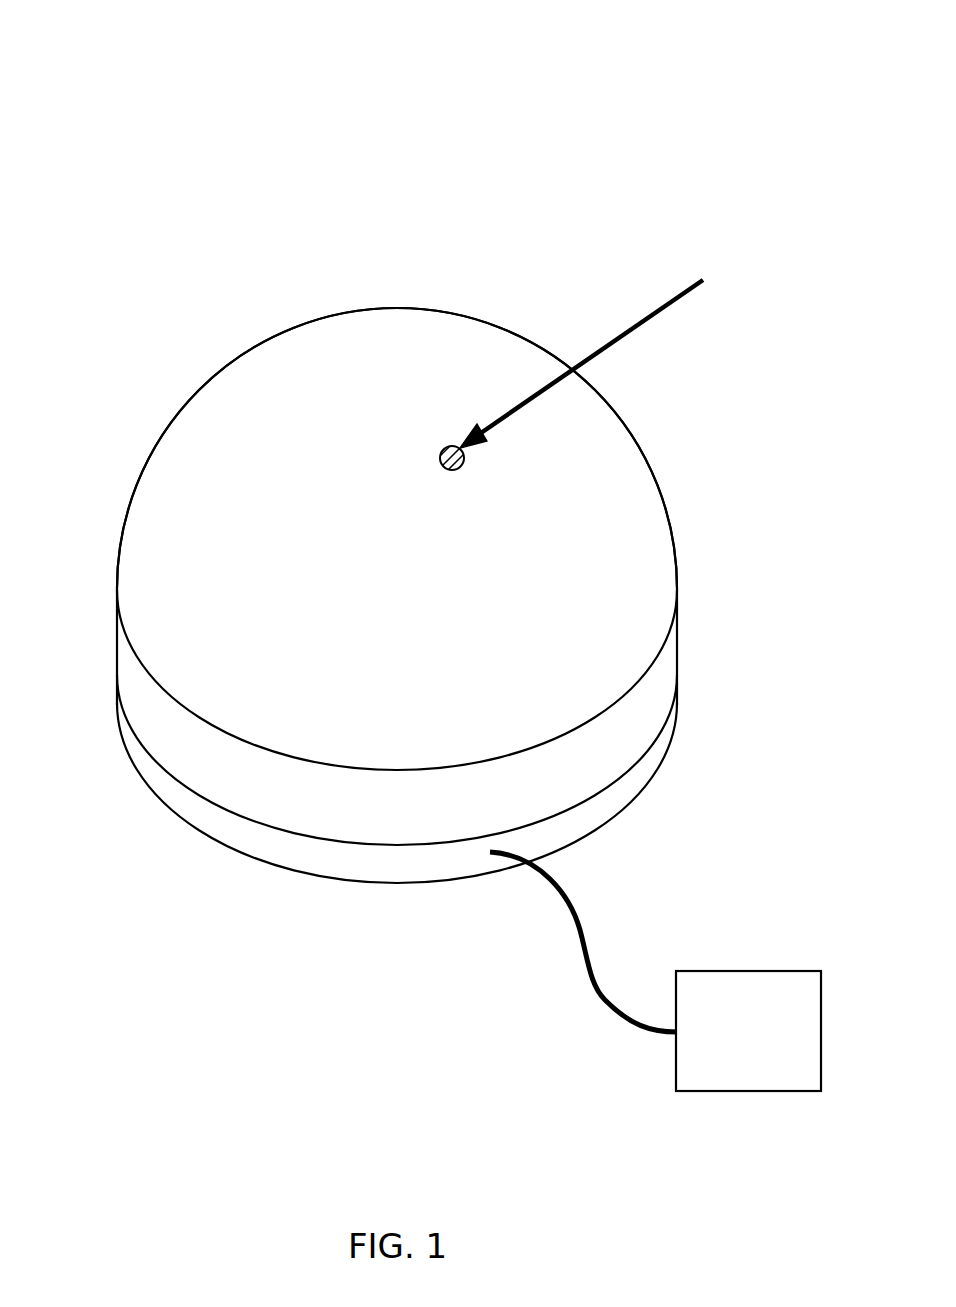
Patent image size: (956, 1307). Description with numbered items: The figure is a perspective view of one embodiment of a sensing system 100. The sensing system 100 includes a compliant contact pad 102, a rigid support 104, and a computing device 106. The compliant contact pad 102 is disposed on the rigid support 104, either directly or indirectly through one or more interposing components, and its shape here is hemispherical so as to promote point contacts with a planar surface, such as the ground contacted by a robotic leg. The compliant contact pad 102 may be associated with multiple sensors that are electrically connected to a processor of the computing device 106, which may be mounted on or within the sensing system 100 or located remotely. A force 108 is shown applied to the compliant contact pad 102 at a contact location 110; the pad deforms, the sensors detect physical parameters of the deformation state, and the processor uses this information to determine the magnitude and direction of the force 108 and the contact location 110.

The sensing system 100 is at (179, 148).
The compliant contact pad 102 is at (190, 448).
The rigid support 104 is at (185, 798).
The computing device 106 is at (735, 970).
The force 108 is at (620, 345).
The contact location 110 is at (452, 446).